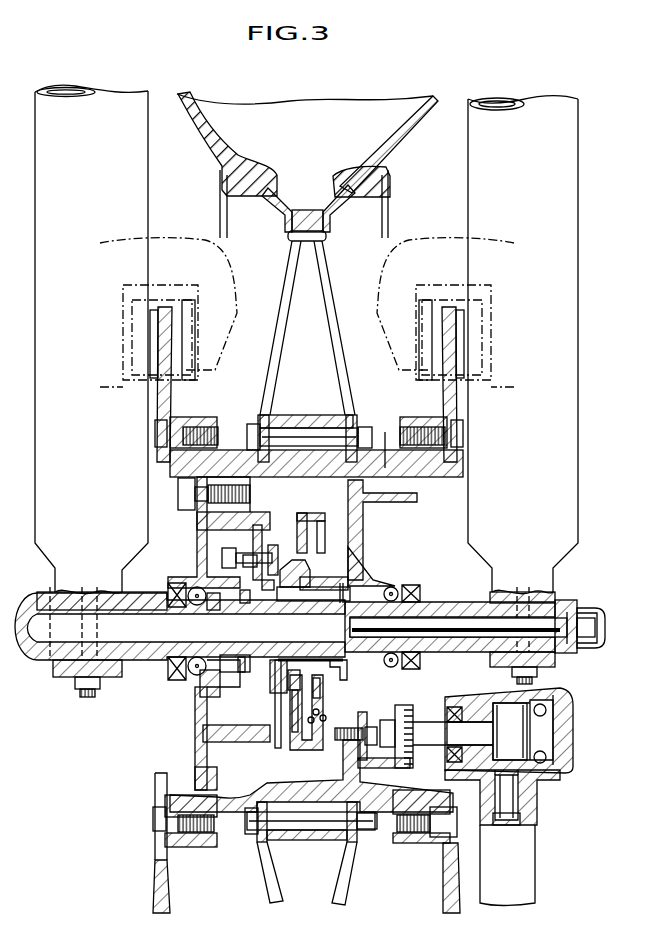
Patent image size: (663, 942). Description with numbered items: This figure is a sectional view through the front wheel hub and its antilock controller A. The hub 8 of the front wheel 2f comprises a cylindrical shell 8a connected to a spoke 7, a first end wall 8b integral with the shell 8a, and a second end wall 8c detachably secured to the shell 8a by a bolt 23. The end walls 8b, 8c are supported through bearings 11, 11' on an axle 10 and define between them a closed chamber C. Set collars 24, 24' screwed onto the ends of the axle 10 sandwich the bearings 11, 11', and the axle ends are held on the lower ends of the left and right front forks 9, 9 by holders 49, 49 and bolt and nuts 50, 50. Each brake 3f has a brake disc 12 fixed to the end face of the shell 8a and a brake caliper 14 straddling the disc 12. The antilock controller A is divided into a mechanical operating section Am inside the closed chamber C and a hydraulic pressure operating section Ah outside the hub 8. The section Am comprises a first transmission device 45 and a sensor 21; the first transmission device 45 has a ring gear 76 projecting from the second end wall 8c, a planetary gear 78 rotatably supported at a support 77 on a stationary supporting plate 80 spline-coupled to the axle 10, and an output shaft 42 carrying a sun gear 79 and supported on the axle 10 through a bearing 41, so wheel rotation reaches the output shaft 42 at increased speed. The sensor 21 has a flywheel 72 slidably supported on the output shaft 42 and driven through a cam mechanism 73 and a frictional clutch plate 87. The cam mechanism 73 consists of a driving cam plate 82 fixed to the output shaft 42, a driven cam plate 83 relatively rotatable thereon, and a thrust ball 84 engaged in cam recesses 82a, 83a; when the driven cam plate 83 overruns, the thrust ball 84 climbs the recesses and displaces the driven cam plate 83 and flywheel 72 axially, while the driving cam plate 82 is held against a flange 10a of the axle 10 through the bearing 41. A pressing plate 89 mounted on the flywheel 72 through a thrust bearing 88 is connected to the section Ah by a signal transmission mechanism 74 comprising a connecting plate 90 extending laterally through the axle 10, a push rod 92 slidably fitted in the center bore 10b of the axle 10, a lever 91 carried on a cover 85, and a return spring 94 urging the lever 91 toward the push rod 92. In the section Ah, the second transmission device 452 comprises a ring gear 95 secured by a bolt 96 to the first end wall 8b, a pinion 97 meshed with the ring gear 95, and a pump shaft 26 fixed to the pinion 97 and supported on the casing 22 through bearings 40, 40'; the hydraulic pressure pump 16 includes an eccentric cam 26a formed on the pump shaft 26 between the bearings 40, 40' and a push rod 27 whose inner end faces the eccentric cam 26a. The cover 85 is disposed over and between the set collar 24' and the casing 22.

The front fork 9 is at (148, 133).
The front wheel 2f is at (396, 182).
The brake 3f is at (112, 240).
The brake caliper 14 is at (168, 240).
The brake disc 12 is at (312, 372).
The spoke 7 is at (327, 290).
The hub 8 is at (305, 428).
The cylindrical shell 8a is at (386, 440).
The first end wall 8b is at (363, 484).
The second end wall 8c is at (198, 550).
The bolt 23 is at (180, 498).
The closed chamber C is at (279, 506).
The sensor 21 is at (305, 511).
The first transmission device 45 is at (284, 539).
The planetary gear support 77 is at (240, 557).
The planetary gear 78 is at (271, 551).
The thrust ball 84 is at (298, 578).
The mechanical operating section Am is at (335, 542).
The antilock controller A is at (442, 527).
The ring gear 95 is at (419, 522).
The bearing 11' is at (402, 606).
The set collar 24 is at (102, 590).
The set collar 24' is at (493, 588).
The center bore 10b is at (452, 618).
The signal transmission mechanism 74 is at (575, 610).
The cover 85 is at (600, 622).
The axle 10 is at (180, 626).
The bearing 11 is at (190, 631).
The flange 10a is at (246, 604).
The cam recess 82a is at (275, 592).
The cam recess 83a is at (292, 592).
The bearing 41 is at (312, 602).
The output shaft 42 is at (333, 592).
The connecting plate 90 is at (383, 594).
The push rod 92 is at (456, 636).
The lever 91 is at (568, 650).
The return spring 94 is at (585, 650).
The holder 49 is at (62, 678).
The bolt and nut 50 is at (87, 698).
The stationary supporting plate 80 is at (240, 706).
The sun gear 79 is at (271, 678).
The driving cam plate 82 is at (288, 690).
The driven cam plate 83 is at (313, 692).
The ring gear 76 is at (255, 736).
The thrust bearing 88 is at (325, 720).
The pressing plate 89 is at (316, 682).
The frictional clutch plate 87 is at (297, 712).
The cam mechanism 73 is at (276, 700).
The flywheel 72 is at (307, 748).
The bolt 96 is at (380, 728).
The pinion 97 is at (405, 712).
The eccentric cam 26a is at (505, 703).
The pump shaft 26 is at (453, 733).
The bearing 40 is at (509, 730).
The bearing 40' is at (568, 730).
The push rod 27 is at (512, 798).
The hydraulic pressure operating section Ah is at (545, 821).
The hydraulic pressure pump 16 is at (510, 826).
The casing 22 is at (535, 860).
The second transmission device 452 is at (392, 775).